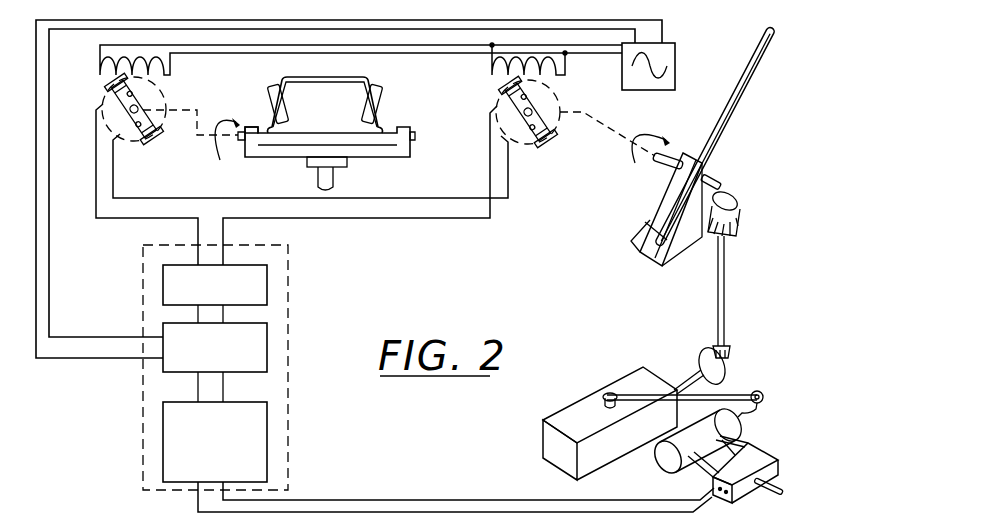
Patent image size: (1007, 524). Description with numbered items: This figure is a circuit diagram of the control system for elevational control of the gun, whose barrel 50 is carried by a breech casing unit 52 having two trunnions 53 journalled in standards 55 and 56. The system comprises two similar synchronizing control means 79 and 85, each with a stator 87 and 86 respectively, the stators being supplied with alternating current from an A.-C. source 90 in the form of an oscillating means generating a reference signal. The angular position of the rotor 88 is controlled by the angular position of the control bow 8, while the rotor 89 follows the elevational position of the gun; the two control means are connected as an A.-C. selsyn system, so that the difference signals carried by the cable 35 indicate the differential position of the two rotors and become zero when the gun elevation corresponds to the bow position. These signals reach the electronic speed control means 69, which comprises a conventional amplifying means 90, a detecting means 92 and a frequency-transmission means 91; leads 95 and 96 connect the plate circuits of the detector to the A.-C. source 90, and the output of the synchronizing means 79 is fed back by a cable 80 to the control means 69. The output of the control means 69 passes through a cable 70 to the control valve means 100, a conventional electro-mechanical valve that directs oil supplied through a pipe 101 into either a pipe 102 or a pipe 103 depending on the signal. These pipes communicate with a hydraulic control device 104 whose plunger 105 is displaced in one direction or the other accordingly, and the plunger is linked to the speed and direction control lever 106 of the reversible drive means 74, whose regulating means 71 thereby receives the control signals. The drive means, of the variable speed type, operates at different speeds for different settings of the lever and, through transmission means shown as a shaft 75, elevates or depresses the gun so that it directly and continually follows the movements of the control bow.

The control bow 8 is at (337, 80).
The cable 35 is at (198, 236).
The barrel 50 is at (722, 136).
The breech casing unit 52 is at (650, 210).
The trunnions 53 is at (662, 170).
The standard 55 is at (640, 250).
The standard 56 is at (674, 253).
The electronic speed control means 69 is at (280, 328).
The cable 70 is at (465, 500).
The regulating means 71 is at (768, 421).
The reversible drive means 74 is at (637, 378).
The shaft 75 is at (726, 316).
The synchronizing means 79 is at (568, 94).
The cable 80 is at (223, 228).
The second control means 85 is at (176, 91).
The stator 86 is at (106, 80).
The stator 87 is at (493, 77).
The rotor 88 is at (147, 137).
The rotor 89 is at (552, 137).
The A.-C. source / amplifying means 90 is at (676, 72).
The frequency-transmission means 91 is at (262, 430).
The detecting means 92 is at (268, 352).
The lead 95 is at (78, 337).
The lead 96 is at (83, 360).
The control valve means 100 is at (765, 453).
The pipe 101 is at (763, 497).
The pipe 102 is at (748, 451).
The pipe 103 is at (704, 475).
The hydraulic control device 104 is at (666, 462).
The plunger 105 is at (760, 408).
The speed and direction control lever 106 is at (722, 394).